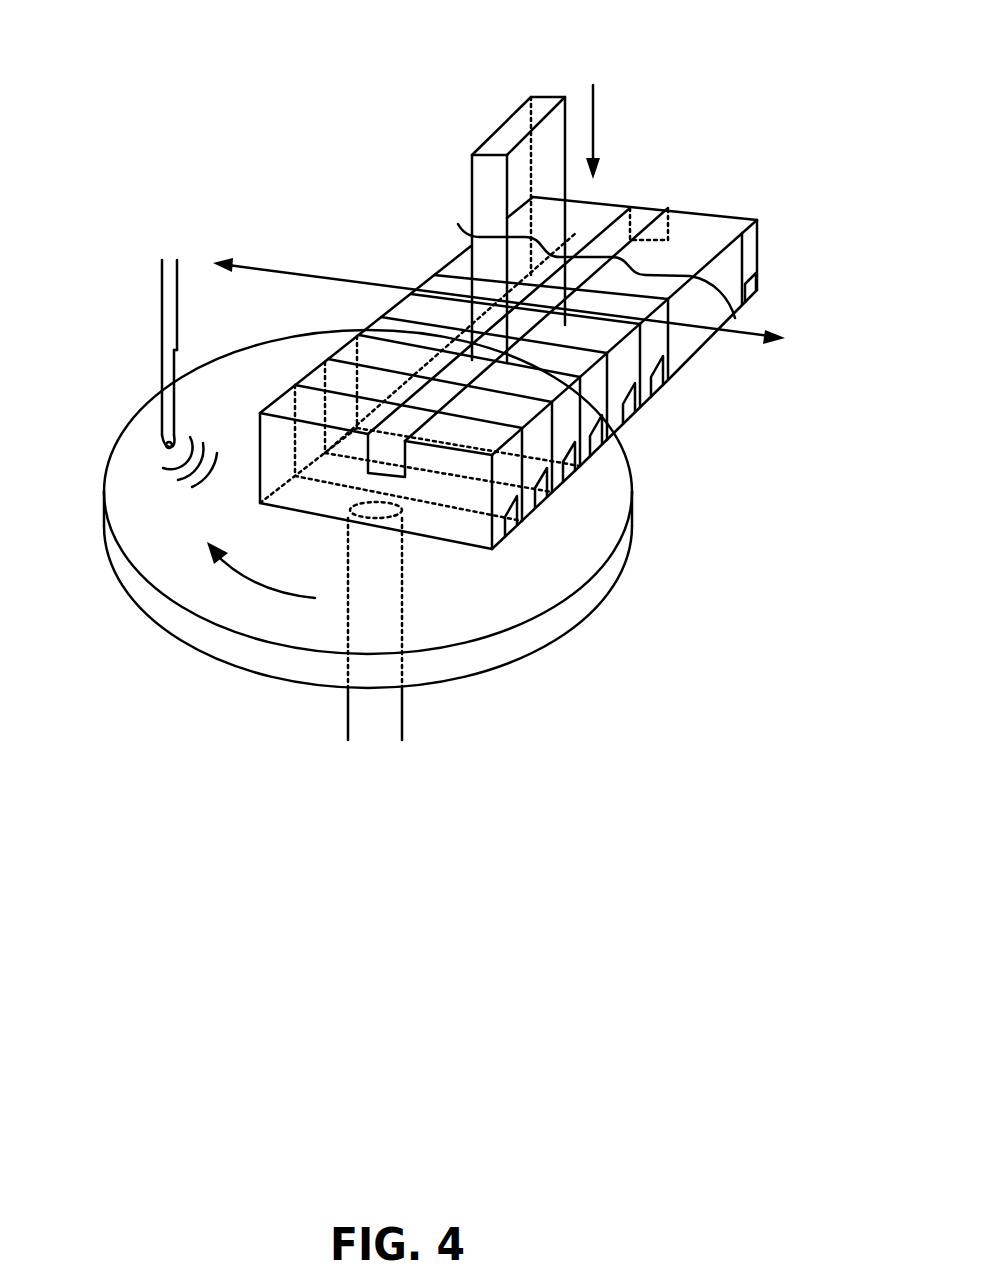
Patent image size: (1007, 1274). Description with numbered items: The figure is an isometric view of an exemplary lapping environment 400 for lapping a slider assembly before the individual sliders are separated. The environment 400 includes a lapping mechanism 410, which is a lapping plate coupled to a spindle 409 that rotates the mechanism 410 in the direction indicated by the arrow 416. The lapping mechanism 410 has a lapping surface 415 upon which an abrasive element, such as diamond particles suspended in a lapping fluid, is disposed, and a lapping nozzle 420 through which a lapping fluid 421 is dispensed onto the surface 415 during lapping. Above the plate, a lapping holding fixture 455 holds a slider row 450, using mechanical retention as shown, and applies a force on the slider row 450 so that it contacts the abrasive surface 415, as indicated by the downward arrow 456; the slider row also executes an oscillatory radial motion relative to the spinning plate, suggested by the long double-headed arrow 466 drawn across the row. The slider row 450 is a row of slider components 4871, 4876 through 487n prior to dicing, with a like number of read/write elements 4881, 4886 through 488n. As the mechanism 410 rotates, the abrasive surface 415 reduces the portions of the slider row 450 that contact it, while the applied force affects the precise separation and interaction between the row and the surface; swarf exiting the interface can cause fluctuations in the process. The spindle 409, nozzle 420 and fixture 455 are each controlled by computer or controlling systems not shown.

The lapping environment 400 is at (480, 41).
The spindle 409 is at (373, 727).
The lapping mechanism 410 is at (532, 659).
The lapping surface 415 is at (430, 628).
The arrow 416 is at (240, 585).
The lapping nozzle 420 is at (160, 318).
The lapping fluid 421 is at (172, 415).
The slider row 450 is at (437, 275).
The lapping holding fixture 455 is at (486, 175).
The downward arrow 456 is at (596, 123).
The traversal direction 466 is at (264, 268).
The slider component 4871 is at (503, 493).
The slider component 4876 is at (655, 350).
The slider component 487n is at (748, 254).
The read/write element 4881 is at (517, 525).
The read/write element 4886 is at (658, 383).
The read/write element 488n is at (757, 290).